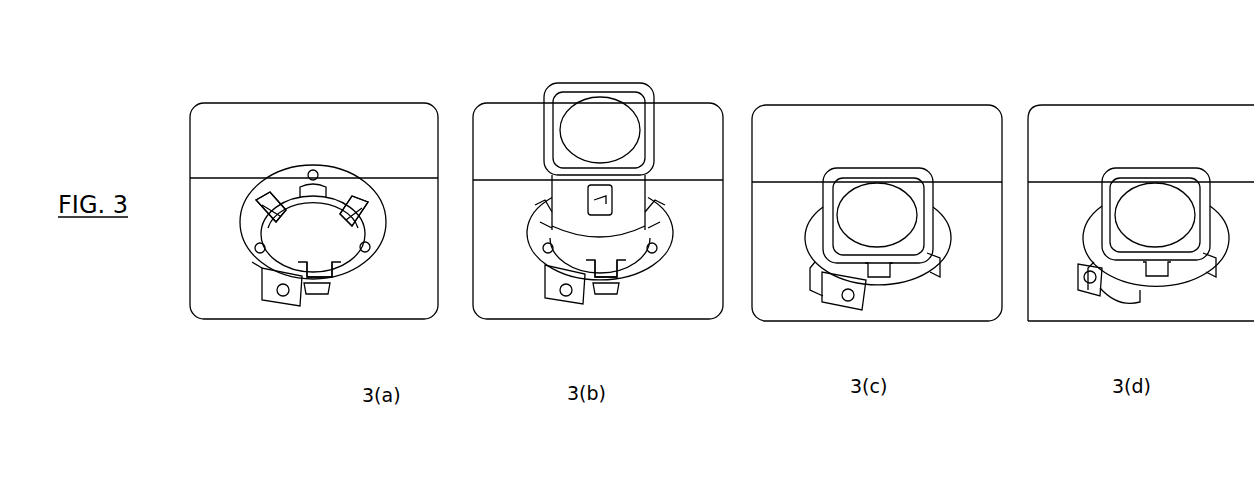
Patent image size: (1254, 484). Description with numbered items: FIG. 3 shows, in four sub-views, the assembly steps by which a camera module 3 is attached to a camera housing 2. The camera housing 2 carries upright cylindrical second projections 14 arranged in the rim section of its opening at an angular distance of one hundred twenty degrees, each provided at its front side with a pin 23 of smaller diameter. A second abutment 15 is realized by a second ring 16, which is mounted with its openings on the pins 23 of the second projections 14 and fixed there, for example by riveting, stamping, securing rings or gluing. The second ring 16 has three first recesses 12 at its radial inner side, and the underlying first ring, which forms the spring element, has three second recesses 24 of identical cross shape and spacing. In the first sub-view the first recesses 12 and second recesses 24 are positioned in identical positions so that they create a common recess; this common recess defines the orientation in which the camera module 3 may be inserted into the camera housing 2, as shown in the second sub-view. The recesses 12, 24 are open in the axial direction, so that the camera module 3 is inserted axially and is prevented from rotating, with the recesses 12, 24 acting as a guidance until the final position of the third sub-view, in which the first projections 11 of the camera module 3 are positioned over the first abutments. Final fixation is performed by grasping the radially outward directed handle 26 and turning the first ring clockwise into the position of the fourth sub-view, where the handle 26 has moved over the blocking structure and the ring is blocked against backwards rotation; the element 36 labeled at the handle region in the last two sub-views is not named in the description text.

The camera housing 2 is at (237, 134).
The camera module 3 is at (614, 84).
The first projections 11 is at (592, 200).
The first recesses 12 is at (328, 280).
The second projections 14 is at (370, 268).
The second abutment 15 is at (352, 187).
The second ring 16 is at (312, 209).
The pins 23 is at (373, 247).
The second recesses 24 is at (462, 268).
The handle 26 is at (290, 300).
The locking lever 36 is at (1078, 272).